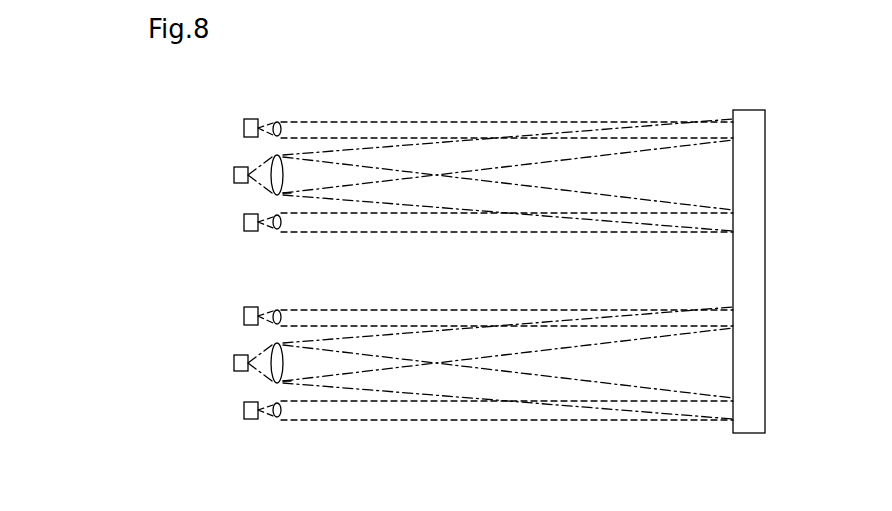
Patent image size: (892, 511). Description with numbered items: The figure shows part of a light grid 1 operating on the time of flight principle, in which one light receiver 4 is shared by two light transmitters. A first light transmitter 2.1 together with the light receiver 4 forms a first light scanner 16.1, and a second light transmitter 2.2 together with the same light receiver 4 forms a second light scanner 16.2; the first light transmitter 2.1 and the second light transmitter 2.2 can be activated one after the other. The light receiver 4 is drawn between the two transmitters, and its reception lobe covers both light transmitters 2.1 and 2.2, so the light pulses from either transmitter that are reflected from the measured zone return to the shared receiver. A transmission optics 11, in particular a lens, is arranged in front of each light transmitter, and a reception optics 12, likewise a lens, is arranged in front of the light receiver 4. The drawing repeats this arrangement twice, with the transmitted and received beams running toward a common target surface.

The light grid 1 is at (421, 85).
The first light transmitter 2.1 is at (251, 130).
The second light transmitter 2.2 is at (251, 227).
The light receiver 4 is at (240, 176).
The transmission optics 11 is at (278, 123).
The reception optics 12 is at (282, 180).
The first light scanner 16.1 is at (205, 134).
The second light scanner 16.2 is at (215, 213).